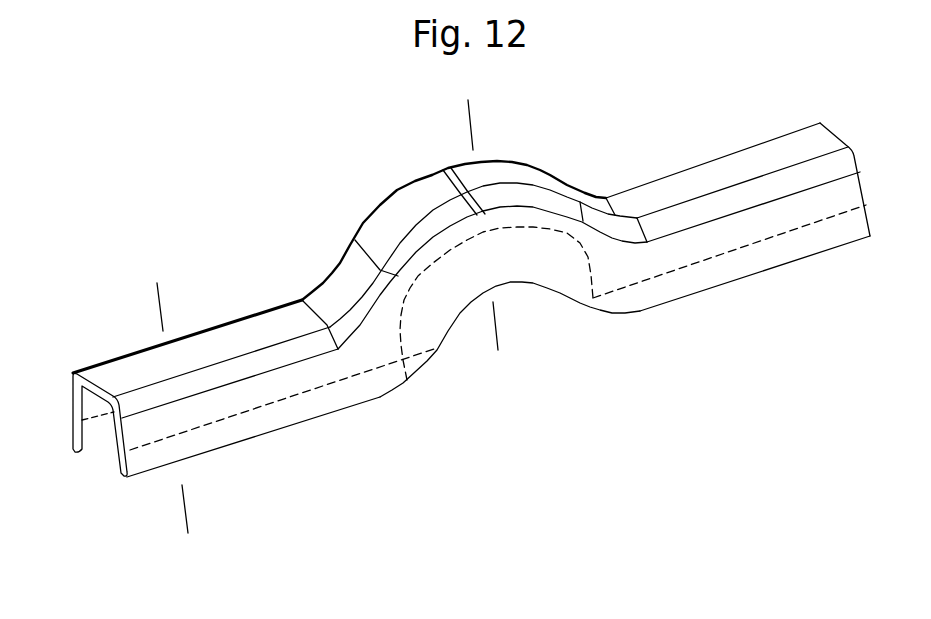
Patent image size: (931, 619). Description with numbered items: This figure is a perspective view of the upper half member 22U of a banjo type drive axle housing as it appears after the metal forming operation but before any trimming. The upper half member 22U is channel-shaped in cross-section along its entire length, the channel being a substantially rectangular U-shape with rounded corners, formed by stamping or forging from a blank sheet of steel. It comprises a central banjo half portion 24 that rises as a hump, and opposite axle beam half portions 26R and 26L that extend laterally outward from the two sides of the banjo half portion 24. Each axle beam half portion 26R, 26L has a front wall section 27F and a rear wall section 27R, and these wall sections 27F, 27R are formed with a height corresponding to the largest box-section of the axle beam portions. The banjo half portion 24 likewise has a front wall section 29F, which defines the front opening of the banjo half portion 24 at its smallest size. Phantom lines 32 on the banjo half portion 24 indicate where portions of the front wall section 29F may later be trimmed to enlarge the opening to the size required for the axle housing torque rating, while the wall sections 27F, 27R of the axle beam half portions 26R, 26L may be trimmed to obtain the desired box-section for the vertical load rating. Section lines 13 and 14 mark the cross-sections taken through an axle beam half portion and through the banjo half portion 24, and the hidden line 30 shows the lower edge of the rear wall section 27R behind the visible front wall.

The section line 13- 13 is at (150, 295).
The section line 14- 14 is at (458, 114).
The upper half member 22U is at (356, 200).
The banjo half portion 24 is at (531, 160).
The axle beam half portion 26L is at (231, 322).
The axle beam half portion 26R is at (751, 144).
The front wall section 27F is at (330, 407).
The rear wall section 27R is at (97, 443).
The front wall section 29F is at (567, 290).
The lower edge of rear flange (hidden) 30 is at (255, 410).
The phantom lines 32 is at (425, 276).